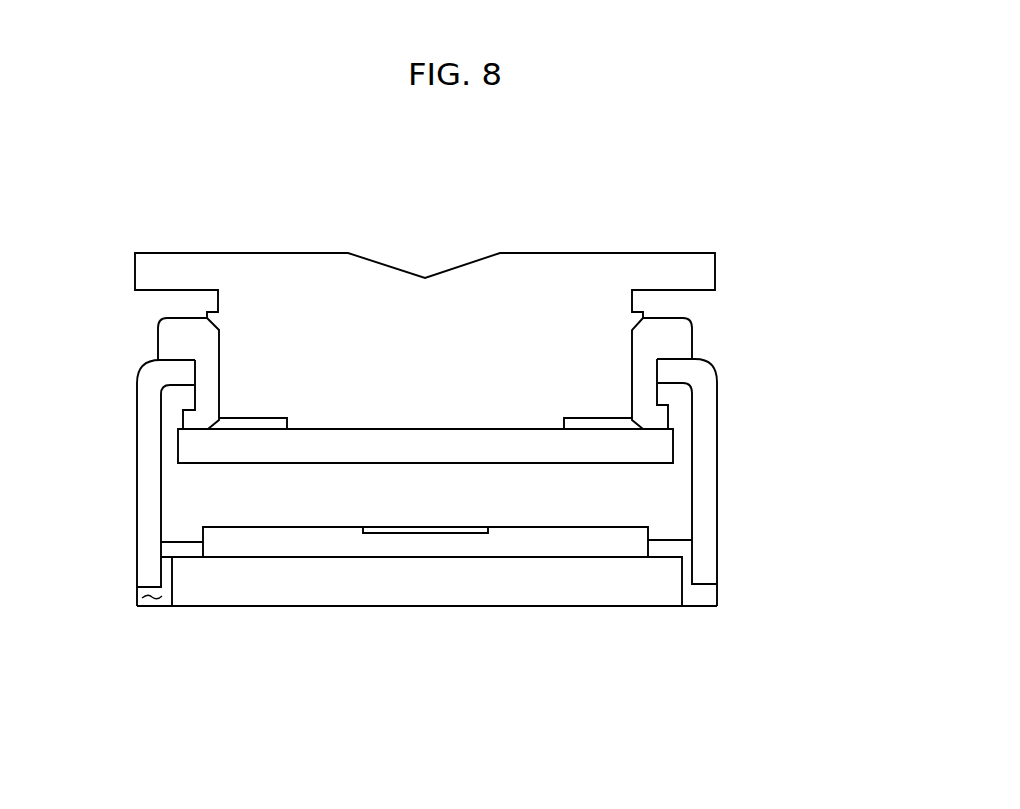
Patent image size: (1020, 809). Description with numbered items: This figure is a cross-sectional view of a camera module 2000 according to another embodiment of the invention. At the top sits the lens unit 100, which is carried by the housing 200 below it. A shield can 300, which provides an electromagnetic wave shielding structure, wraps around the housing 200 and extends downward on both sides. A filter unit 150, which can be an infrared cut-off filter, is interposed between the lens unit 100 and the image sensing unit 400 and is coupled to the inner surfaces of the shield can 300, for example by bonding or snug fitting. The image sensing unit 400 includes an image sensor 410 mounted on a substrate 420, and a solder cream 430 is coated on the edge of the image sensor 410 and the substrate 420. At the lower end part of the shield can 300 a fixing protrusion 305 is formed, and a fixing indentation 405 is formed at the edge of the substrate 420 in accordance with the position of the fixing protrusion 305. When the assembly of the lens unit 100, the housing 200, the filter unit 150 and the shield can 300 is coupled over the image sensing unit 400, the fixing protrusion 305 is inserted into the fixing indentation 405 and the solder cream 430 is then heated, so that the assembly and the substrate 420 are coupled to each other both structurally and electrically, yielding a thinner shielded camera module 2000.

The camera module 2000 is at (732, 173).
The lens unit 100 is at (700, 267).
The housing 200 is at (693, 337).
The shield can 300 is at (703, 395).
The fixing protrusion 305 is at (145, 578).
The filter unit 150 is at (658, 448).
The image sensing unit 400 is at (838, 522).
The image sensor 410 is at (637, 538).
The substrate 420 is at (712, 584).
The solder cream 430 is at (175, 550).
The fixing indentation 405 is at (148, 600).